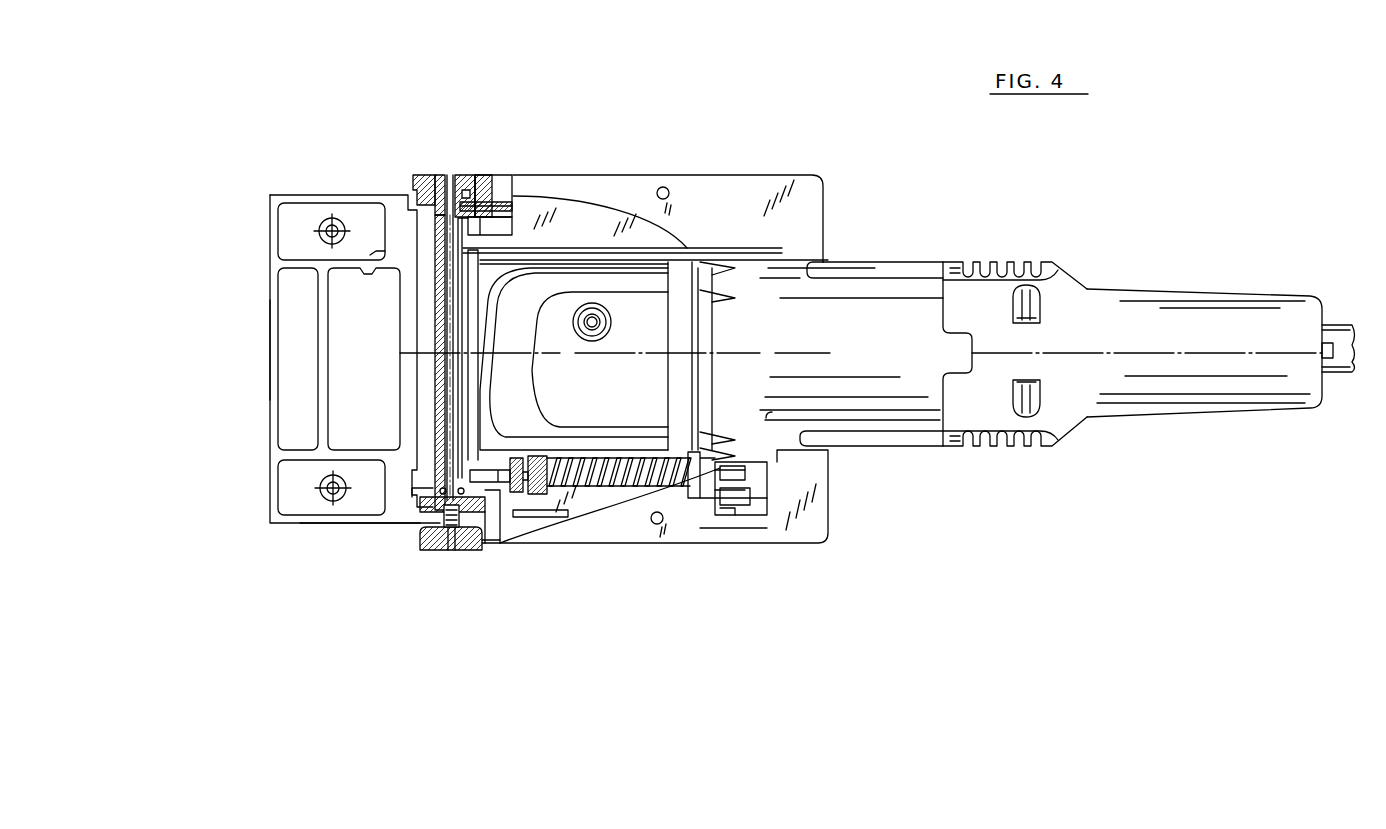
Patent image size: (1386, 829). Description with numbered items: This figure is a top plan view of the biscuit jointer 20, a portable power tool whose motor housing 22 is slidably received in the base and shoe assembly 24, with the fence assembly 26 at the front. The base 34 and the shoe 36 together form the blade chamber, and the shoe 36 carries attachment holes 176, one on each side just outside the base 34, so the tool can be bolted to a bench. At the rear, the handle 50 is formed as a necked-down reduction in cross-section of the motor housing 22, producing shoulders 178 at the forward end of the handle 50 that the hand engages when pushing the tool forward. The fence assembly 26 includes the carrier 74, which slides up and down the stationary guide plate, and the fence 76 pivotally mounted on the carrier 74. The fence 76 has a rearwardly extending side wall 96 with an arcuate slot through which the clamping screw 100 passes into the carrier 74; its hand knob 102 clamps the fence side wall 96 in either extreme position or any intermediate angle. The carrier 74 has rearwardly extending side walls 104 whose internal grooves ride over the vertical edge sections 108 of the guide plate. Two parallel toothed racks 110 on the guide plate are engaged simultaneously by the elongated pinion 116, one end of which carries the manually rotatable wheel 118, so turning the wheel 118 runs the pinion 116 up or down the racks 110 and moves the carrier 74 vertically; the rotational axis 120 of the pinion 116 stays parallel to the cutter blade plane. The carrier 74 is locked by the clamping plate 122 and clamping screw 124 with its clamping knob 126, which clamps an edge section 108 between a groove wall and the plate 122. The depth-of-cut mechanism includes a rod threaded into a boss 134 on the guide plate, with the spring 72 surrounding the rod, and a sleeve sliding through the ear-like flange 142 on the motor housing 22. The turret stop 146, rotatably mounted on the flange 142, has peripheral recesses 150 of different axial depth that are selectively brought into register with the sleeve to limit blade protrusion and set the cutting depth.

The biscuit jointer 20 is at (768, 143).
The motor housing 22 is at (877, 263).
The base and shoe assembly 24 is at (848, 518).
The fence assembly 26 is at (322, 182).
The base 34 is at (540, 517).
The shoe 36 is at (717, 528).
The rear handle 50 is at (1205, 325).
The spring 72 is at (657, 488).
The carrier 74 is at (433, 213).
The fence 76 is at (270, 318).
The side wall 96 is at (340, 523).
The clamping screw 100 is at (452, 530).
The hand knob 102 is at (430, 540).
The side walls 104 is at (492, 500).
The vertical edge sections 108 is at (472, 462).
The toothed racks 110 is at (460, 237).
The pinion 116 is at (442, 323).
The manually rotatable wheel 118 is at (440, 175).
The rotational axis 120 is at (437, 393).
The clamping plate 122 is at (478, 200).
The clamping screw 124 is at (487, 204).
The clamping knob 126 is at (510, 183).
The boss 134 is at (512, 496).
The ear-like flange 142 is at (703, 470).
The turret stop 146 is at (752, 497).
The recesses 150 is at (745, 490).
The attachment holes 176 is at (667, 199).
The shoulders 178 is at (1085, 282).